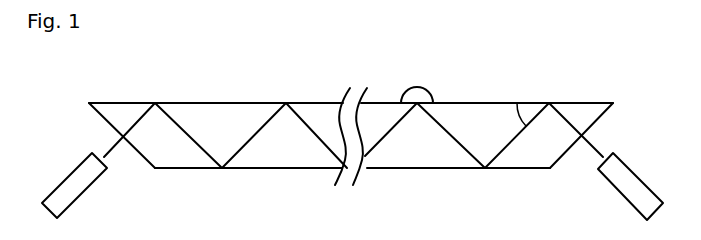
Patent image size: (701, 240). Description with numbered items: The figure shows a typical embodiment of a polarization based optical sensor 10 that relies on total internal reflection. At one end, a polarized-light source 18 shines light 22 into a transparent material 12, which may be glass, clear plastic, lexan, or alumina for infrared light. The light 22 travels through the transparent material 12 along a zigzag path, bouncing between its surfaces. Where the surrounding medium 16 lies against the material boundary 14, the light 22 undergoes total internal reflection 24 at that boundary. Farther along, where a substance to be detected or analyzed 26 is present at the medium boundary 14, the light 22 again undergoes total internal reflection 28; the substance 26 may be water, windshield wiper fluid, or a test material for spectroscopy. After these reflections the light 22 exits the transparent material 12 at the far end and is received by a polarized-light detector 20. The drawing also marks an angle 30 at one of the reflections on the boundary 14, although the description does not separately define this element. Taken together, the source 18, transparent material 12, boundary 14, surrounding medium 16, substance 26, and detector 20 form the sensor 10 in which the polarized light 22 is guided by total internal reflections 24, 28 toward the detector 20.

The polarization based optical sensor 10 is at (523, 79).
The transparent material 12 is at (221, 128).
The material boundary 14 is at (598, 103).
The surrounding medium 16 is at (352, 107).
The polarized-light source 18 is at (63, 187).
The polarized-light detector 20 is at (635, 180).
The light 22 is at (303, 125).
The total internal reflection 24 is at (157, 100).
The substance to be detected or analyzed 26 is at (424, 91).
The total internal reflection 28 is at (417, 110).
The angle of incidence 30 is at (516, 114).